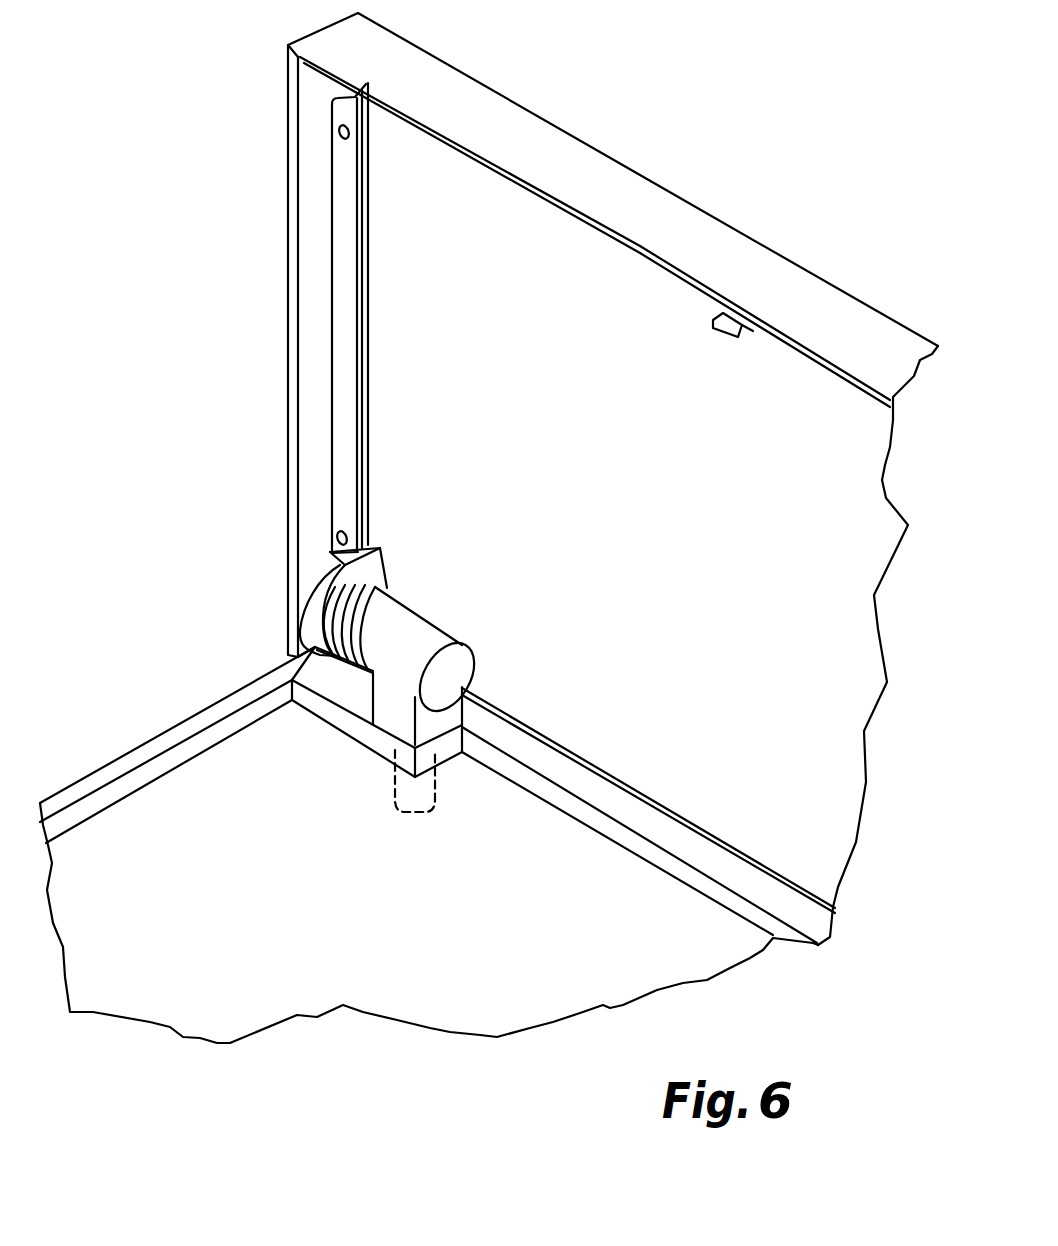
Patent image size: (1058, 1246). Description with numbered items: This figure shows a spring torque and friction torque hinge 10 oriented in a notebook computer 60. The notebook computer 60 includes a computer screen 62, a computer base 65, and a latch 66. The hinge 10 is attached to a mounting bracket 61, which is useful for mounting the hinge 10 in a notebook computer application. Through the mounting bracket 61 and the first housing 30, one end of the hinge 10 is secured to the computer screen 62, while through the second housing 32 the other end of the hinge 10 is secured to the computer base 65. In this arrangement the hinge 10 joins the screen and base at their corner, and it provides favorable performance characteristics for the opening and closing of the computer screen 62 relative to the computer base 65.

The hinge 10 is at (462, 662).
The first housing 30 is at (377, 569).
The second housing 32 is at (398, 719).
The notebook computer 60 is at (362, 447).
The mounting bracket 61 is at (358, 352).
The computer screen 62 is at (303, 44).
The computer base 65 is at (153, 732).
The latch 66 is at (723, 338).